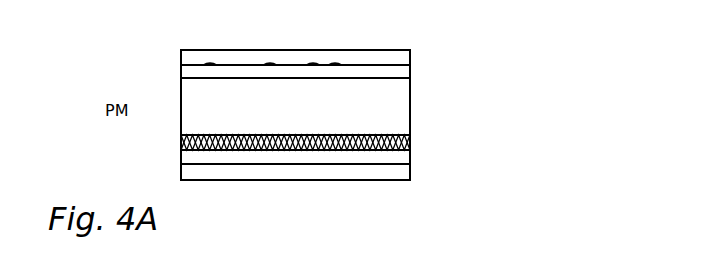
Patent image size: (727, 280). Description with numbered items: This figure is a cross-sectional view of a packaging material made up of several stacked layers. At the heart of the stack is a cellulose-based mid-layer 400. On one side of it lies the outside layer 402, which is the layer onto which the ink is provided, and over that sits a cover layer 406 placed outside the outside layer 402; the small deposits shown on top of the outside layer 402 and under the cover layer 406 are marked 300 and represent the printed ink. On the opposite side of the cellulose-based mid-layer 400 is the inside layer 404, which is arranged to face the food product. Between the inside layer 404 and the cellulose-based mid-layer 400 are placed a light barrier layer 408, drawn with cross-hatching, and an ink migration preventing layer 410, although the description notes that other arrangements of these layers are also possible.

The particles / contaminants on layer 300 is at (340, 62).
The cellulose-based mid-layer 400 is at (393, 102).
The outside layer 402 is at (398, 72).
The inside layer 404 is at (402, 170).
The cover layer 406 is at (409, 54).
The light barrier layer 408 is at (410, 138).
The ink migration preventing layer 410 is at (402, 156).